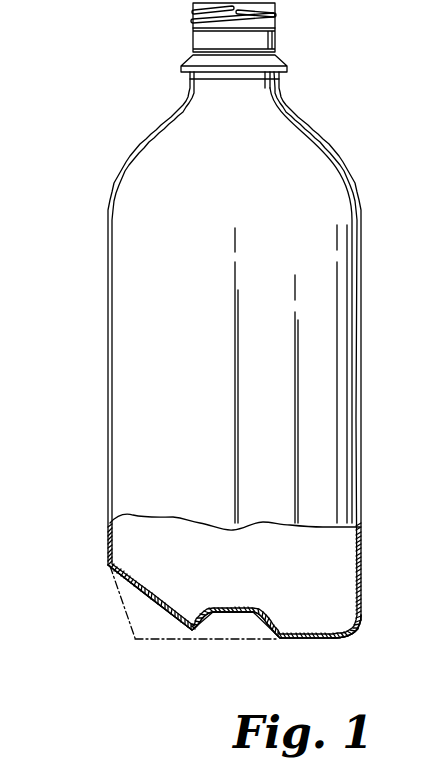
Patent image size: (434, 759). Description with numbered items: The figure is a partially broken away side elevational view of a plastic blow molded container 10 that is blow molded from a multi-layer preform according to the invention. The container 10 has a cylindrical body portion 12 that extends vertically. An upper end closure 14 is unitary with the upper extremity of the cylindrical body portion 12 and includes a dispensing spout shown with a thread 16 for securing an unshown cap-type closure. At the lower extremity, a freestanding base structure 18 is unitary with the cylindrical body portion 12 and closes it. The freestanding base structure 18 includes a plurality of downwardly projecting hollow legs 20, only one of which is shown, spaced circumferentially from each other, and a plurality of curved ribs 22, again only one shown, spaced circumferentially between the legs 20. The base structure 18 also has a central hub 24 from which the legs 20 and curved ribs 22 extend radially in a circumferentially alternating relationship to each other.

The plastic blow molded container 10 is at (373, 248).
The cylindrical body portion 12 is at (143, 355).
The upper end closure 14 is at (190, 42).
The thread 16 is at (197, 22).
The freestanding base structure 18 is at (377, 569).
The downwardly projecting hollow legs 20 is at (350, 622).
The curved ribs 22 is at (157, 608).
The central hub 24 is at (227, 616).